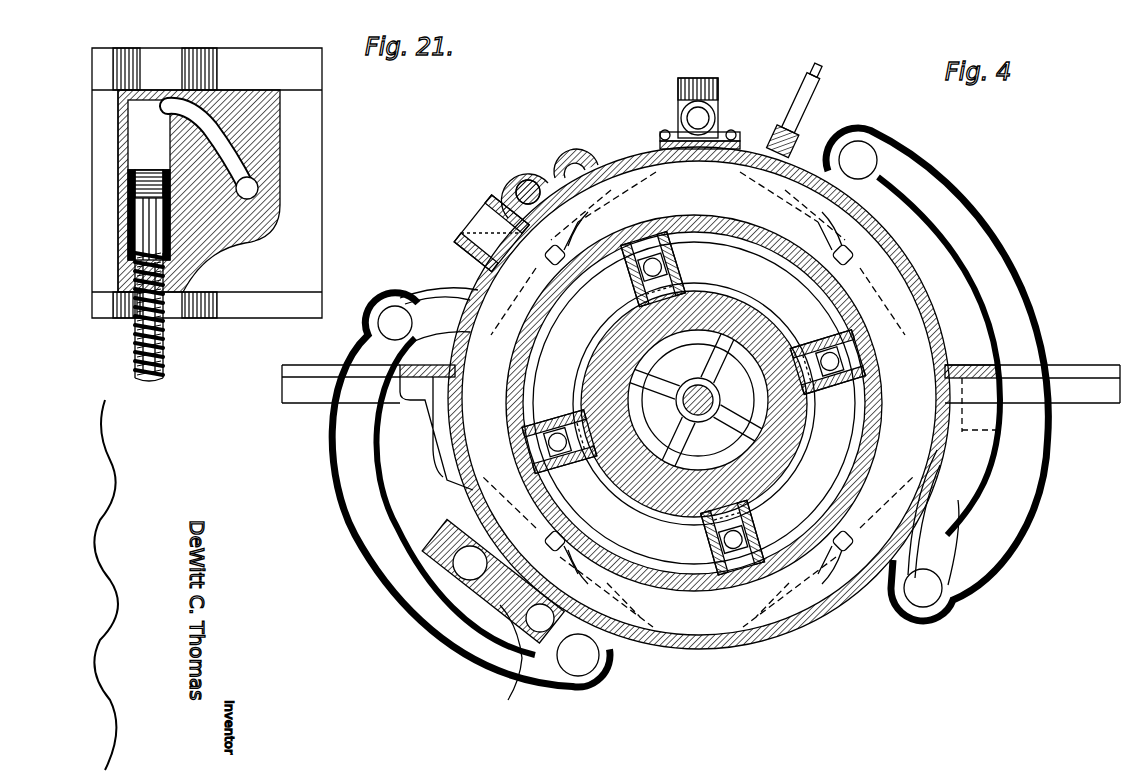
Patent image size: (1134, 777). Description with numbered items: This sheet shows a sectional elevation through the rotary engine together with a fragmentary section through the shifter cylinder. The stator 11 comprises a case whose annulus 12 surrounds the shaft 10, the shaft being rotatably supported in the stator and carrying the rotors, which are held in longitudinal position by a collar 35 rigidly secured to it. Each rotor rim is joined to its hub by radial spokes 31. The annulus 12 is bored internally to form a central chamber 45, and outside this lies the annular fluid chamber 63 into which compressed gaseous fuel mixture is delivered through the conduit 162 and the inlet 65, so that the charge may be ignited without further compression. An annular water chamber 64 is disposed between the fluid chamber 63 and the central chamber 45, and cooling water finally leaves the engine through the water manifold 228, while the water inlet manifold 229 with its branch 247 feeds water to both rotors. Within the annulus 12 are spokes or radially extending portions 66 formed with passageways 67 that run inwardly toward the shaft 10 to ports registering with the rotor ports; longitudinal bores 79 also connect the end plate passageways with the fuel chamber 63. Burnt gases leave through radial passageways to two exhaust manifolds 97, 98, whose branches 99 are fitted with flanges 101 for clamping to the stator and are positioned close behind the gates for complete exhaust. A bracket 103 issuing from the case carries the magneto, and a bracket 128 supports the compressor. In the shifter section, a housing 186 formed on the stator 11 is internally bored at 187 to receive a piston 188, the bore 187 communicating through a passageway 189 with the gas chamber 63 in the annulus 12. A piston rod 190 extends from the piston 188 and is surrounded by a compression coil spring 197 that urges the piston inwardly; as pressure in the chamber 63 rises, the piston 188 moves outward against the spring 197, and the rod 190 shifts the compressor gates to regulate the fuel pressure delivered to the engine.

In FIG. 21, the annulus 12 is at (270, 65).
In FIG. 4, the annulus 12 is at (741, 307).
In FIG. 21, the housing 186 is at (118, 120).
In FIG. 4, the housing 186 is at (528, 190).
In FIG. 21, the bore 187 is at (140, 143).
In FIG. 4, the bore 187 is at (545, 187).
In FIG. 21, the piston 188 is at (145, 215).
In FIG. 4, the piston 188 is at (533, 183).
In FIG. 21, the passageway 189 is at (220, 148).
In FIG. 4, the passageway 189 is at (577, 173).
In FIG. 21, the piston rod 190 is at (162, 335).
In FIG. 21, the compression coil spring 197 is at (137, 351).
In FIG. 4, the fluid chamber 63 is at (647, 182).
In FIG. 4, the annular water chamber 64 is at (607, 316).
In FIG. 4, the shaft 10 is at (694, 392).
In FIG. 4, the collar 35 is at (720, 398).
In FIG. 4, the radial spokes 31 is at (643, 372).
In FIG. 4, the central chamber 45 is at (688, 470).
In FIG. 4, the spokes or radially extending portions 66 is at (640, 272).
In FIG. 4, the passageways 67 is at (665, 252).
In FIG. 4, the longitudinal bores 79 is at (556, 256).
In FIG. 4, the flanges 101 is at (776, 207).
In FIG. 4, the stator 11 is at (814, 616).
In FIG. 4, the exhaust manifold 97 is at (350, 555).
In FIG. 4, the exhaust manifold 98 is at (975, 238).
In FIG. 4, the branches 99 is at (840, 130).
In FIG. 4, the bracket 128 is at (327, 387).
In FIG. 4, the bracket 103 is at (1063, 385).
In FIG. 4, the conduit 162 is at (462, 222).
In FIG. 4, the inlet 65 is at (510, 237).
In FIG. 4, the water manifold 228 is at (706, 80).
In FIG. 4, the water inlet manifold 229 is at (458, 562).
In FIG. 4, the branch 247 is at (503, 666).